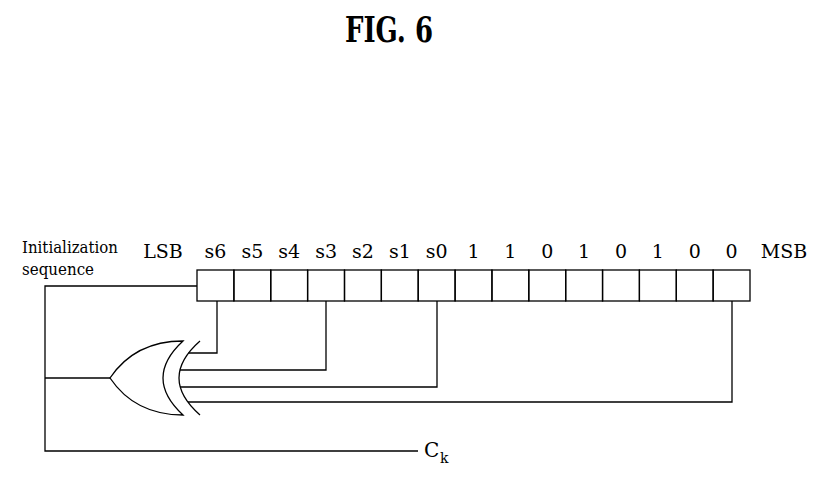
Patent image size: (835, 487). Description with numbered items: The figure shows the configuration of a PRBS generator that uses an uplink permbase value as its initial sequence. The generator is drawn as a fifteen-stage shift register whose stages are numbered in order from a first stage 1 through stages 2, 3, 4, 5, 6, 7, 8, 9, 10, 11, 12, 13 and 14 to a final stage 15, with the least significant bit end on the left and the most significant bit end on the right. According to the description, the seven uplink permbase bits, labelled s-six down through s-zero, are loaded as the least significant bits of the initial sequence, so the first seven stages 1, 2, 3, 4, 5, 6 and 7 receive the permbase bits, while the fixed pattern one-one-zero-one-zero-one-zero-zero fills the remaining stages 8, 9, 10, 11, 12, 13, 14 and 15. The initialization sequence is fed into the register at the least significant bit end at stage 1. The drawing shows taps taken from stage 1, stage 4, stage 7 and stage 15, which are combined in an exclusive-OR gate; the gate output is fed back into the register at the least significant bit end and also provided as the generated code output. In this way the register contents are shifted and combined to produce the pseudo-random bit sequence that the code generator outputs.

The shift register stage 1 is at (215, 285).
The shift register stage 2 is at (252, 285).
The shift register stage 3 is at (289, 285).
The shift register stage 4 is at (326, 285).
The shift register stage 5 is at (363, 285).
The shift register stage 6 is at (399, 285).
The shift register stage 7 is at (436, 285).
The shift register stage 8 is at (473, 285).
The shift register stage 9 is at (510, 285).
The shift register stage 10 is at (547, 285).
The shift register stage 11 is at (584, 285).
The shift register stage 12 is at (621, 285).
The shift register stage 13 is at (657, 285).
The shift register stage 14 is at (694, 285).
The shift register stage 15 is at (731, 285).